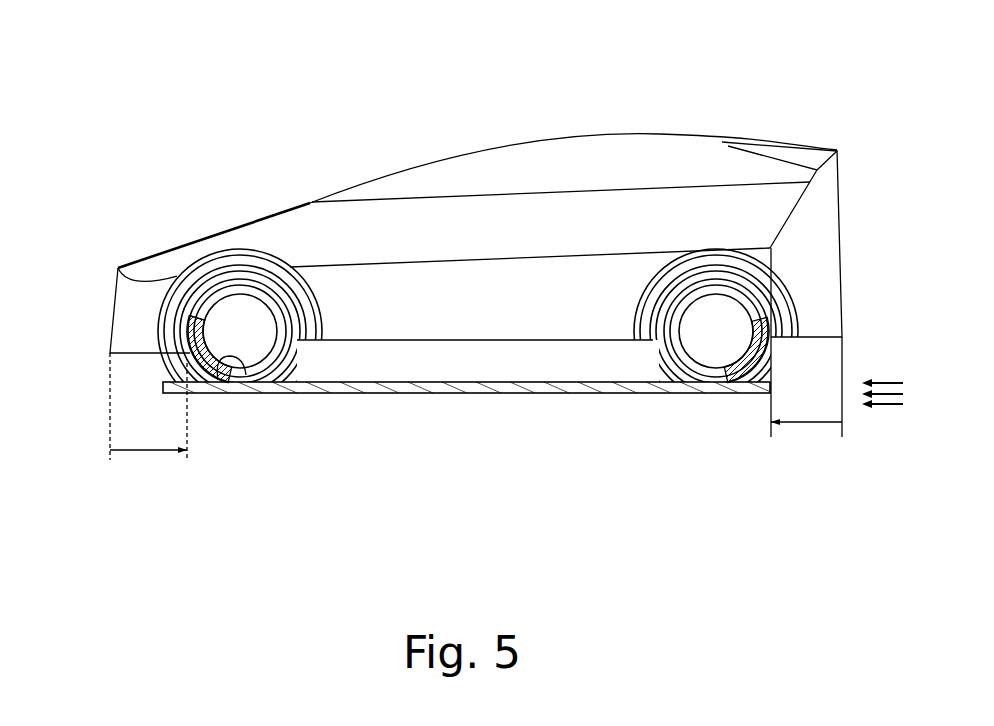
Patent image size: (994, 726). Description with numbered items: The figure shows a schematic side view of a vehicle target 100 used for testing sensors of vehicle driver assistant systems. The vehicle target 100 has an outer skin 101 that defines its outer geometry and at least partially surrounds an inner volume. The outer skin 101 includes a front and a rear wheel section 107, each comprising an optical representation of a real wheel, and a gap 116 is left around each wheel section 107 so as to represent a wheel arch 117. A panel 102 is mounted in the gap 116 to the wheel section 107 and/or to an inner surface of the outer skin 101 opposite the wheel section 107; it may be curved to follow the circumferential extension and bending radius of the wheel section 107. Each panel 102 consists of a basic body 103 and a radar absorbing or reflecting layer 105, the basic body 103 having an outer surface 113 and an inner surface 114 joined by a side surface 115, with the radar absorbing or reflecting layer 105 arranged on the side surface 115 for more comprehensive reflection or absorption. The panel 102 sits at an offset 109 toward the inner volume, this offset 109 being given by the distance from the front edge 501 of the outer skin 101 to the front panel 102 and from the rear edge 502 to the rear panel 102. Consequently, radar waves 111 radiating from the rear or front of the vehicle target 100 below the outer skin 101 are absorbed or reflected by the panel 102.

The vehicle target 100 is at (372, 135).
The outer skin 101 is at (322, 230).
The panel 102 is at (182, 372).
The basic body 103 is at (217, 383).
The radar absorbing or reflecting layer 105 is at (203, 319).
The wheel section 107 is at (219, 341).
The offset 109 is at (140, 452).
The radar waves 111 is at (892, 407).
The outer surface 113 is at (185, 361).
The inner surface 114 is at (228, 360).
The side surface 115 is at (220, 366).
The gap 116 is at (295, 350).
The wheel arch 117 is at (300, 340).
The front edge 501 is at (110, 353).
The rear edge 502 is at (840, 328).